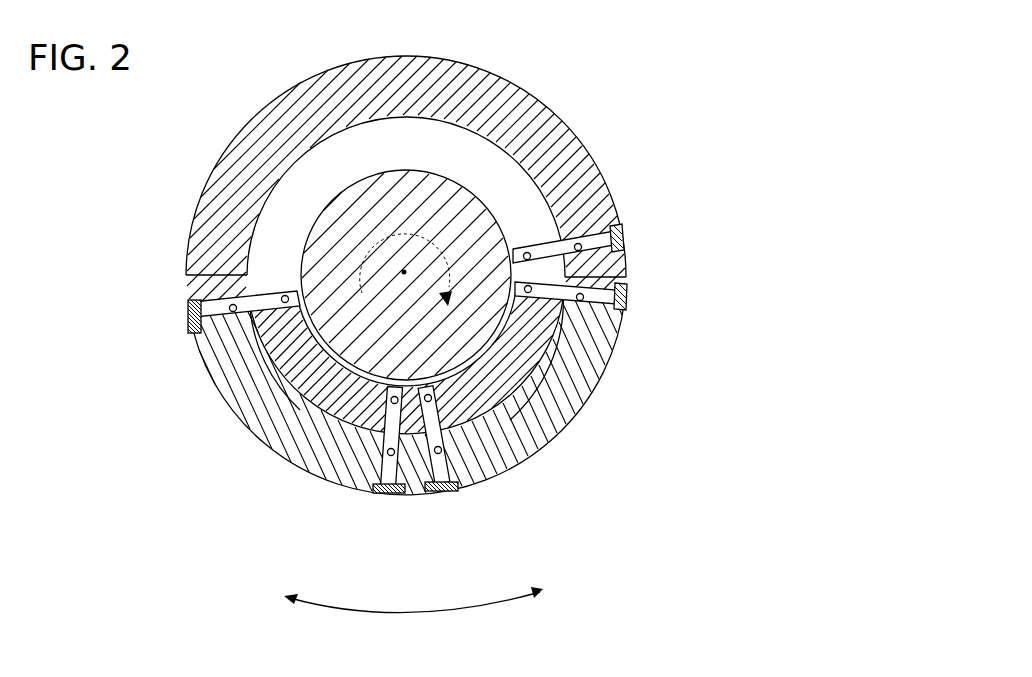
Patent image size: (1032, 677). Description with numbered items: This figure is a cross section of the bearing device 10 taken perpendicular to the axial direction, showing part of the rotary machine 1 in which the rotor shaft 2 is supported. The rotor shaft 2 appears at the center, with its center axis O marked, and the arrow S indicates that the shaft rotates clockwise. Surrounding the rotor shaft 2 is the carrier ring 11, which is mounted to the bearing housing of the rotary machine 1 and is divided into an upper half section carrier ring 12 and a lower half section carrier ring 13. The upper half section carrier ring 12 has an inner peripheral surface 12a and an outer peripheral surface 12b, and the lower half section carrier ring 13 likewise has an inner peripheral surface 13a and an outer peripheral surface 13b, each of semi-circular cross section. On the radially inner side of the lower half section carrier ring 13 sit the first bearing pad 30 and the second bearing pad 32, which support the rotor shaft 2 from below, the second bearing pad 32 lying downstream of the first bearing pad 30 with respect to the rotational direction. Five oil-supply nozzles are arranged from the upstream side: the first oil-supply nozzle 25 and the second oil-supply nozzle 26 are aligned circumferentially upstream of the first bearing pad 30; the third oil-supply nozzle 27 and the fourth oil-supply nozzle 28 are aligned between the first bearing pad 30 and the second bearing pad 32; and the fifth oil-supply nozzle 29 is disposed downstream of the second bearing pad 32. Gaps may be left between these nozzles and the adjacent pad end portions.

The rotary machine 1 is at (729, 37).
The rotor shaft 2 is at (393, 208).
The bearing device 10 is at (619, 176).
The carrier ring 11 is at (422, 73).
The upper half section carrier ring 12 is at (228, 168).
The inner peripheral surface 12a is at (258, 235).
The outer peripheral surface 12b is at (203, 197).
The lower half section carrier ring 13 is at (225, 390).
The inner peripheral surface 13a is at (255, 285).
The outer peripheral surface 13b is at (232, 378).
The first oil-supply nozzle 25 is at (626, 237).
The second oil-supply nozzle 26 is at (628, 297).
The third oil-supply nozzle 27 is at (445, 494).
The fourth oil-supply nozzle 28 is at (393, 494).
The fifth oil-supply nozzle 29 is at (193, 315).
The first bearing pad 30 is at (507, 387).
The second bearing pad 32 is at (307, 417).